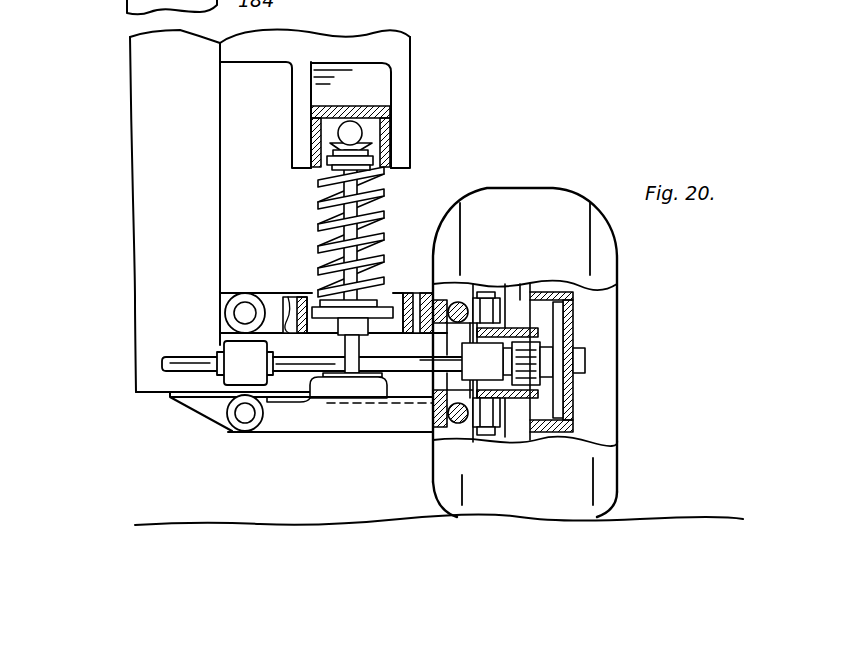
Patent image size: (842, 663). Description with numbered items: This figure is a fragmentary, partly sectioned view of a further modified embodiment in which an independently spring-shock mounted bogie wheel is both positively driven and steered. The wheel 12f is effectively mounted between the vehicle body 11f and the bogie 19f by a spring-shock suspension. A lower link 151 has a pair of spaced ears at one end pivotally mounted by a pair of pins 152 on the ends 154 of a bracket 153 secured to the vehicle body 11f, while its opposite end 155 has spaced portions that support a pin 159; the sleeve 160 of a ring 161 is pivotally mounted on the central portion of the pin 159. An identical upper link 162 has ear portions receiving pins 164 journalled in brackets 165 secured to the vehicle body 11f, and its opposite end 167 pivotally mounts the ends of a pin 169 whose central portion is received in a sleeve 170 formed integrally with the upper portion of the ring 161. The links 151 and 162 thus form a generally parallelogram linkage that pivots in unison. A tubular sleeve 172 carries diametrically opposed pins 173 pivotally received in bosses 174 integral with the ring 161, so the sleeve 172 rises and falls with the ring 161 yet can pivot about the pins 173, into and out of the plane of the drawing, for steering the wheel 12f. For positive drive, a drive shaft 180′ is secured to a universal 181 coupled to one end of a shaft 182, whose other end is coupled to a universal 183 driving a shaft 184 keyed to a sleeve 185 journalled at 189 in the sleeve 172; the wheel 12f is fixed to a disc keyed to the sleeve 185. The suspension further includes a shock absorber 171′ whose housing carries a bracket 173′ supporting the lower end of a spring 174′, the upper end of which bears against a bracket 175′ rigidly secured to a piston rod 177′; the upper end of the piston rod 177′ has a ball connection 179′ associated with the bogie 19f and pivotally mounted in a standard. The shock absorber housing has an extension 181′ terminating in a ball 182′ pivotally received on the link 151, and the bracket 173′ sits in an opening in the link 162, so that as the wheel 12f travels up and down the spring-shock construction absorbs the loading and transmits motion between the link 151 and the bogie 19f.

The vehicle body 11f is at (143, 398).
The wheel 12f is at (617, 468).
The bogie 19f is at (410, 86).
The lower link 151 is at (290, 432).
The pins 152 is at (247, 418).
The bracket 153 is at (210, 405).
The ends of bracket 154 is at (228, 430).
The opposite end of lower link 155 is at (433, 458).
The pin 159 is at (473, 440).
The sleeve 160 is at (433, 430).
The ring 161 is at (450, 350).
The upper link 162 is at (315, 292).
The pins 164 is at (228, 303).
The brackets 165 is at (287, 297).
The opposite end of upper link 167 is at (413, 293).
The pin 169 is at (470, 283).
The sleeve 170 is at (573, 410).
The shock absorber 171′ is at (320, 203).
The tubular sleeve 172 is at (520, 284).
The pins 173 is at (492, 284).
The bracket 173′ is at (318, 250).
The bosses 174 is at (510, 284).
The spring 174′ is at (372, 210).
The bracket 175′ is at (311, 150).
The piston rod 177′ is at (332, 150).
The ball connection 179′ is at (311, 116).
The drive shaft 180′ is at (188, 348).
The universal 181 is at (237, 352).
The extension 181′ is at (330, 373).
The shaft 182 is at (338, 357).
The ball 182′ is at (330, 403).
The universal 183 is at (480, 365).
The shaft 184 is at (553, 341).
The sleeve 185 is at (565, 380).
The journal 189 is at (545, 322).